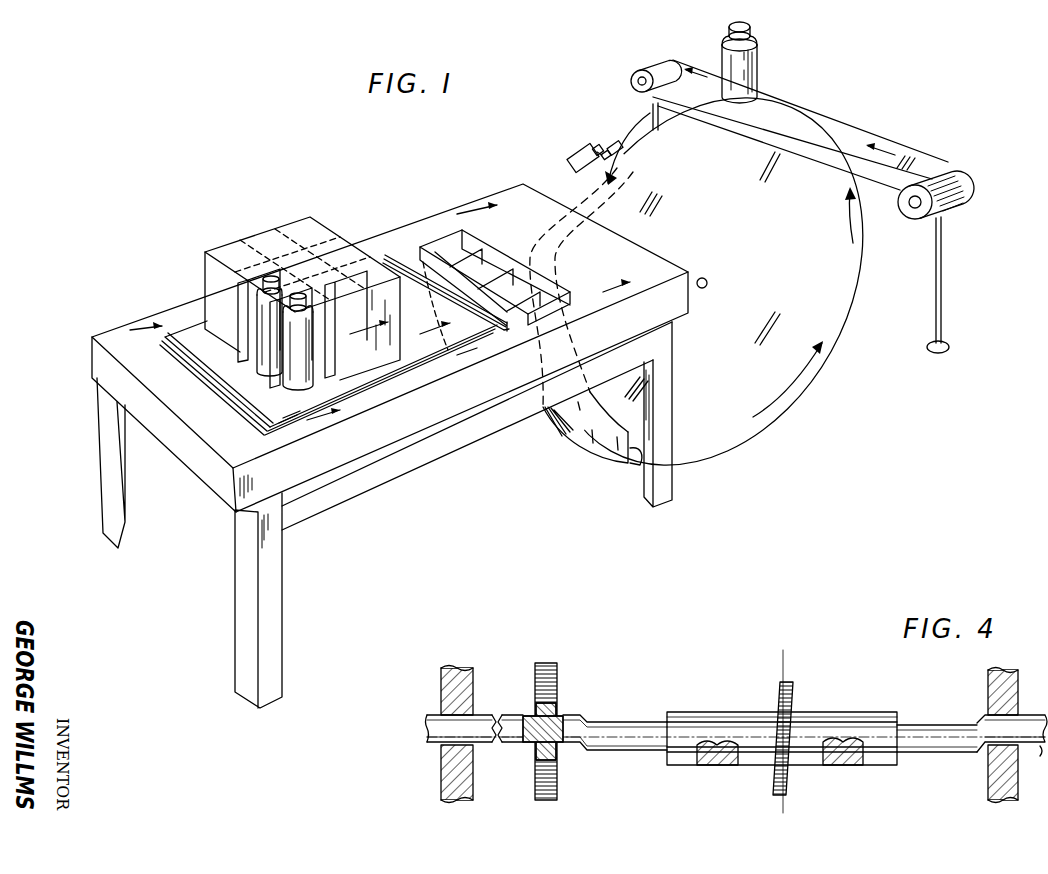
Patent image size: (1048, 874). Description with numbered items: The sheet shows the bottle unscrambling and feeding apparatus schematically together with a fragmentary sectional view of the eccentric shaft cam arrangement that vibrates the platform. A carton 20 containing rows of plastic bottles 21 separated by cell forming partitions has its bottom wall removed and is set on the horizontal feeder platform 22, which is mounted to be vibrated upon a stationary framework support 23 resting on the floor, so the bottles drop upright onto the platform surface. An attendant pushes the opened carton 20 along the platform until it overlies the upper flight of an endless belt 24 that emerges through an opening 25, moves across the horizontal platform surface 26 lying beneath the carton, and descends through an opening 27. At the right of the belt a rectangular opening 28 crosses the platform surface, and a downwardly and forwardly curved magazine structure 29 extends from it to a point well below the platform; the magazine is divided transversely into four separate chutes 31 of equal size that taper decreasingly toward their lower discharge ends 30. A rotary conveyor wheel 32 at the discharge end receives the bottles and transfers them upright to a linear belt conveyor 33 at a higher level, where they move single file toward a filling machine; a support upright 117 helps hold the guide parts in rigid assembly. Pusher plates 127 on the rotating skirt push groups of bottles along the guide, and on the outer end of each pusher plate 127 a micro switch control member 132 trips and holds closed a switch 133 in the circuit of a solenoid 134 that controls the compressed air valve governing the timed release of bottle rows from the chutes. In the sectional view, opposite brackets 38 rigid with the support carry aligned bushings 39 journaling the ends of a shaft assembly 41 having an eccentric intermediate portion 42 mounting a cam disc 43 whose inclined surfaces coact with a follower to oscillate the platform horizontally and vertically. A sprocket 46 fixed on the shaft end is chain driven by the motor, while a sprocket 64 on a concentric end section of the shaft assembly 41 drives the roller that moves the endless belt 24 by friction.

In FIG. 1, the carton 20 is at (224, 251).
In FIG. 1, the plastic bottles 21 is at (758, 63).
In FIG. 1, the horizontal feeder platform 22 is at (220, 482).
In FIG. 1, the stationary framework support 23 is at (331, 498).
In FIG. 1, the endless belt 24 is at (433, 343).
In FIG. 1, the opening 25 is at (287, 415).
In FIG. 1, the horizontal platform surface 26 is at (330, 412).
In FIG. 1, the opening 27 is at (483, 345).
In FIG. 1, the rectangular opening 28 is at (460, 240).
In FIG. 1, the magazine structure 29 is at (570, 415).
In FIG. 1, the lower discharge ends 30 is at (640, 468).
In FIG. 1, the chutes 31 is at (497, 262).
In FIG. 1, the rotary conveyor wheel 32 is at (835, 320).
In FIG. 1, the linear belt conveyor 33 is at (908, 158).
In FIG. 1, the support upright 117 is at (942, 288).
In FIG. 1, the pusher plate 127 is at (638, 130).
In FIG. 1, the micro switch control member 132 is at (611, 150).
In FIG. 1, the switch 133 is at (602, 152).
In FIG. 1, the solenoid 134 is at (572, 152).
In FIG. 4, the brackets 38 is at (450, 683).
In FIG. 4, the bushings 39 is at (458, 752).
In FIG. 4, the shaft assembly 41 is at (511, 716).
In FIG. 4, the eccentric intermediate portion 42 is at (626, 728).
In FIG. 4, the cam disc 43 is at (775, 780).
In FIG. 4, the sprocket 46 is at (1046, 760).
In FIG. 4, the sprocket 64 is at (553, 779).